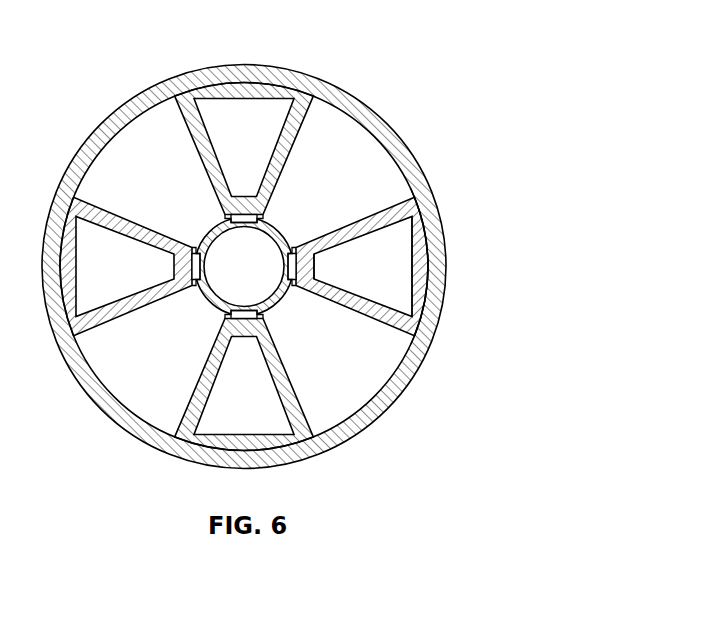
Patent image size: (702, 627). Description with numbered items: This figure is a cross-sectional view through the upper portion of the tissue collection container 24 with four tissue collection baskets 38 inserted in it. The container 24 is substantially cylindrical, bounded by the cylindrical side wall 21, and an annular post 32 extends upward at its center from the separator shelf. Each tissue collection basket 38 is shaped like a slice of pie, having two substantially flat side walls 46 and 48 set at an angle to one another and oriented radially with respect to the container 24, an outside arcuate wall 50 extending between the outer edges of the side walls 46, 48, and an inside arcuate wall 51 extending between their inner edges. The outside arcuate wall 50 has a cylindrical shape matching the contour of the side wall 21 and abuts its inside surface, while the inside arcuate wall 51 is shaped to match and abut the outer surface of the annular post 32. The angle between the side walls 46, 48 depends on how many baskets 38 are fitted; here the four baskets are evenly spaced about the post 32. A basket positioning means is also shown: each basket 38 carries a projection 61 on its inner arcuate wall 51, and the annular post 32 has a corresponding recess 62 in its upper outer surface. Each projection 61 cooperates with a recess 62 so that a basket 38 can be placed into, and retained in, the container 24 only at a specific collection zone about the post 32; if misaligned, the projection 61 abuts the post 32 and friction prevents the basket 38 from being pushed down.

The tissue collection container 24 is at (291, 260).
The cylindrical side wall 21 is at (346, 433).
The annular post 32 is at (205, 236).
The tissue collection basket 38 is at (258, 149).
The side wall 46 is at (360, 302).
The side wall 48 is at (409, 230).
The outside arcuate wall 50 is at (418, 243).
The inside arcuate wall 51 is at (308, 264).
The projection 61 is at (281, 342).
The recess 62 is at (172, 288).